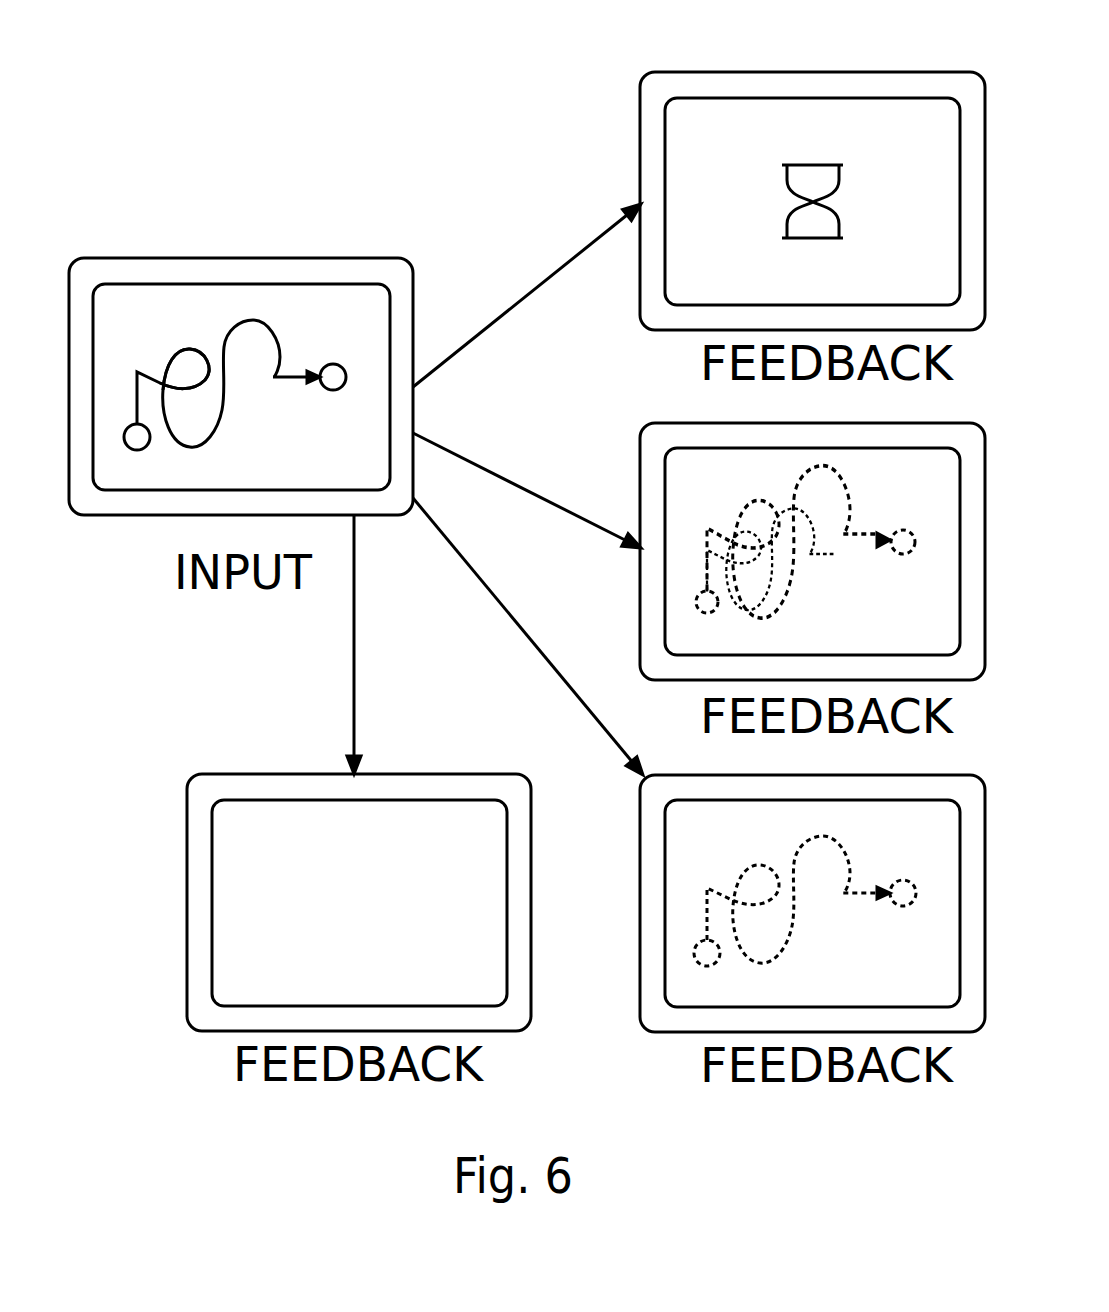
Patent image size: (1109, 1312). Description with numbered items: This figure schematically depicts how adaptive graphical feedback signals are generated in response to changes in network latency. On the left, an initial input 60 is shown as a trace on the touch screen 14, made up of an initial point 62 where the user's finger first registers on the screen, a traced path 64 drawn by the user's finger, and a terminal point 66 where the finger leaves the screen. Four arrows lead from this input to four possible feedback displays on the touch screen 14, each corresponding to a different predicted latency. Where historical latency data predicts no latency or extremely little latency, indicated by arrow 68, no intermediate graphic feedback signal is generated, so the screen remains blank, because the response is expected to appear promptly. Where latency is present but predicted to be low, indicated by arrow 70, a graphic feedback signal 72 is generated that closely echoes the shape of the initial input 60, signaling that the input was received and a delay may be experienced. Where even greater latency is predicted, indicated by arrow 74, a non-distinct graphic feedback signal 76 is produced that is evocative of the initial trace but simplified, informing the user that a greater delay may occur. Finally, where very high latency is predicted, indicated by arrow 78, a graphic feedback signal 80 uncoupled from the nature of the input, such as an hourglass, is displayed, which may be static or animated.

The touch screen 14 is at (220, 258).
The initial input 60 is at (264, 418).
The initial point 62 is at (137, 450).
The traced path 64 is at (188, 350).
The terminal point 66 is at (333, 363).
The arrow 68 is at (353, 719).
The arrow 70 is at (547, 666).
The graphic feedback signal 72 is at (823, 931).
The arrow 74 is at (585, 527).
The graphic feedback signal 76 is at (828, 576).
The arrow 78 is at (503, 317).
The graphic feedback signal 80 is at (868, 207).